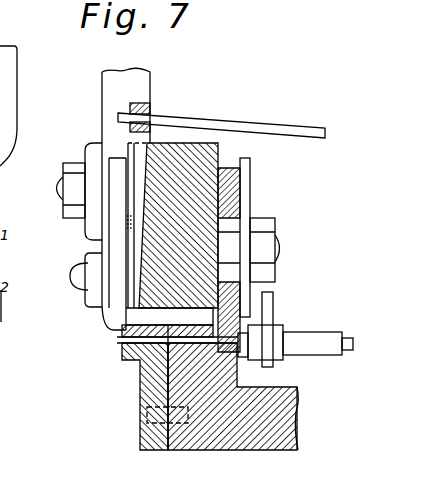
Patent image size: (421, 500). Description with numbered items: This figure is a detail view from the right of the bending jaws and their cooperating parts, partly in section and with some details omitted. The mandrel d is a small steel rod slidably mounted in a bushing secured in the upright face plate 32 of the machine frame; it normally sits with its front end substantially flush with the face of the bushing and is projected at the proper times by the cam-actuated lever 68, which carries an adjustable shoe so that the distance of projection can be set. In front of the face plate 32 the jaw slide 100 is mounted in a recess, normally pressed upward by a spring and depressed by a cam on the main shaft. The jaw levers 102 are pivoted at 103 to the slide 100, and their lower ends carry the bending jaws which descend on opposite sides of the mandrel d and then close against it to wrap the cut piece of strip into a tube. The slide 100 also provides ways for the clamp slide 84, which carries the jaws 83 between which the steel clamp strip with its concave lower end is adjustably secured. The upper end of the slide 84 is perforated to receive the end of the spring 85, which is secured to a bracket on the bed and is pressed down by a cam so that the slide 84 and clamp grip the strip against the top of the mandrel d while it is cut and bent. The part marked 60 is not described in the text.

The jaw levers 102 is at (102, 122).
The slide 100 is at (221, 118).
The spring 85 is at (245, 100).
The slide 84 is at (127, 250).
The pivot 103 is at (53, 188).
The jaws 83 is at (112, 283).
The lever 68 is at (275, 308).
The mandrel d is at (118, 338).
The base block 60 is at (130, 360).
The face plate 32 is at (185, 438).